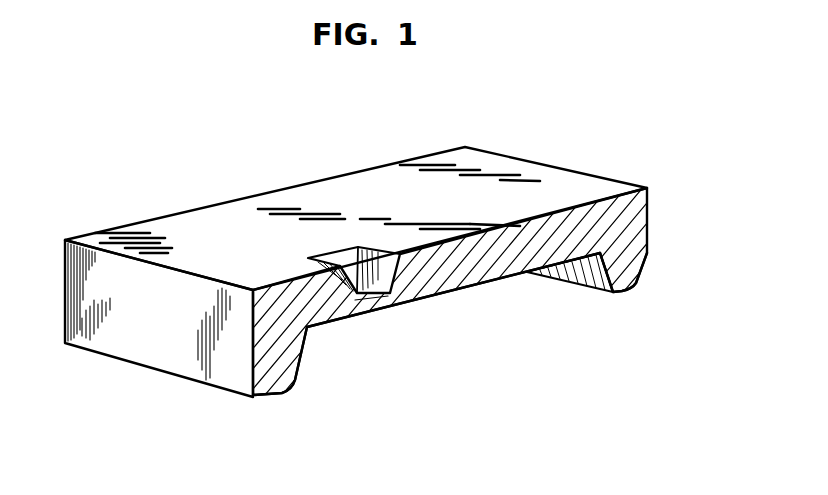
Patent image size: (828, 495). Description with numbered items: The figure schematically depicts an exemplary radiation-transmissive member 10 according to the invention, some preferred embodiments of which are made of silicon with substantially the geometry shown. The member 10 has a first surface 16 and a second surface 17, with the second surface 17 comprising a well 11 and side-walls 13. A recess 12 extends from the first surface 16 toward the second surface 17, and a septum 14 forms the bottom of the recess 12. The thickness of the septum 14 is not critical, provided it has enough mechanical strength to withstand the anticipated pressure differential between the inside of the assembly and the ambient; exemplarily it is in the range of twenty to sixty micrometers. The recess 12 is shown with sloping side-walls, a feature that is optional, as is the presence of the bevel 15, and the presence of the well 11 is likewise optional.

The radiation-transmissive member 10 is at (282, 161).
The well 11 is at (487, 287).
The recess 12 is at (383, 280).
The side-walls 13 is at (597, 278).
The septum 14 is at (363, 307).
The bevel 15 is at (637, 275).
The first surface 16 is at (527, 187).
The second surface 17 is at (268, 397).